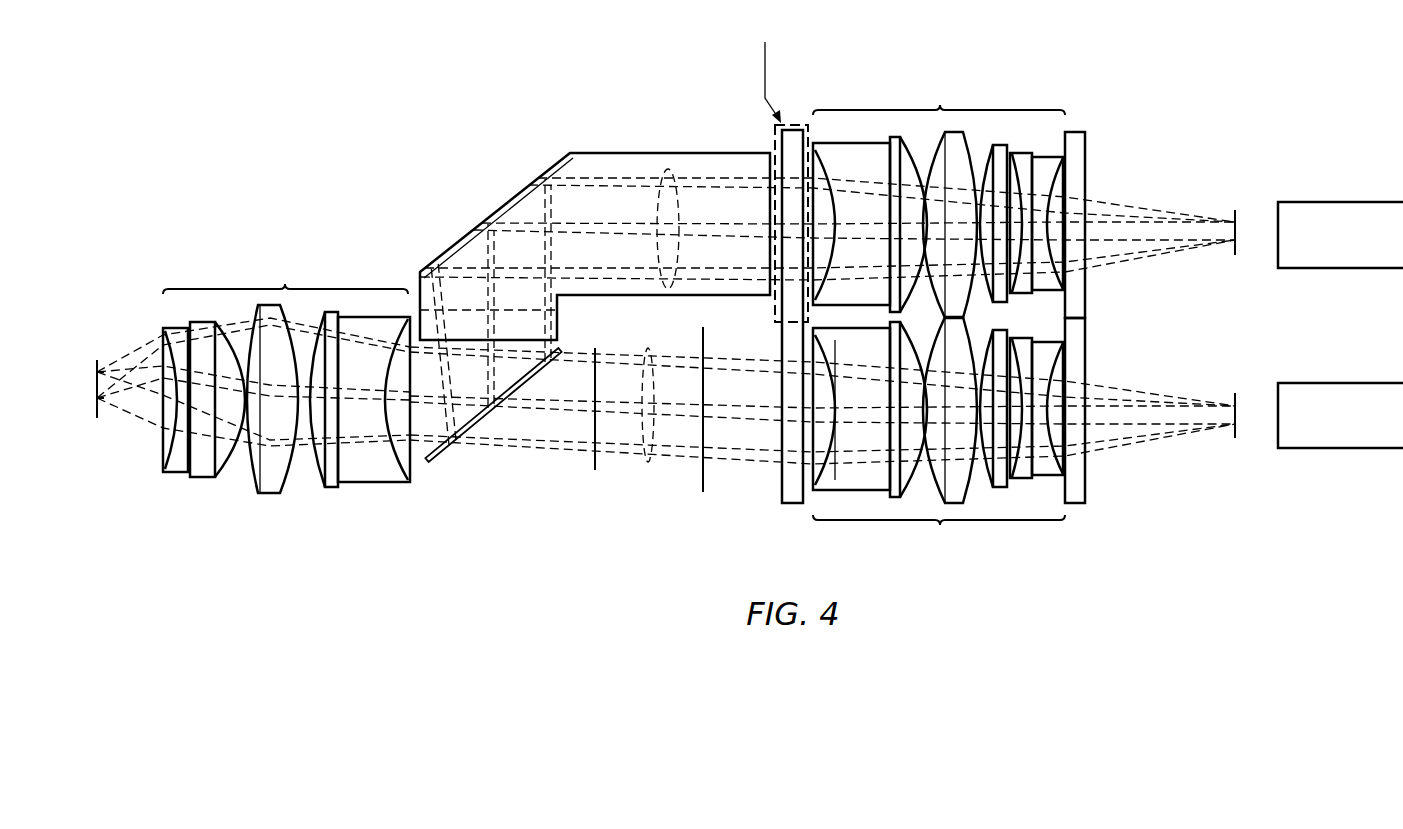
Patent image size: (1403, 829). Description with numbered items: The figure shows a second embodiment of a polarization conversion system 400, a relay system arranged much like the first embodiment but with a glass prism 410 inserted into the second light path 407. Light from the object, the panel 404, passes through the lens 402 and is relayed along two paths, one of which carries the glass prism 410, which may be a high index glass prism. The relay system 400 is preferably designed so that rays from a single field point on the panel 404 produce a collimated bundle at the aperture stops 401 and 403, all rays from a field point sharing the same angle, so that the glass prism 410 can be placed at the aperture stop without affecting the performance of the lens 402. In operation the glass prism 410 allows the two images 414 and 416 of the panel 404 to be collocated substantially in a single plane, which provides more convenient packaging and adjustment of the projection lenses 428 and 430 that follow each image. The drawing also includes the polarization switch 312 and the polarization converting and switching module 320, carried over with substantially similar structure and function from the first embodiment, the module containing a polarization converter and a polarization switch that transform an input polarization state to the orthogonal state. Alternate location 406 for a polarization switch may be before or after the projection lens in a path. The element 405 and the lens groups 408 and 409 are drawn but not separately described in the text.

The polarization conversion system 400 is at (384, 98).
The lens 402 is at (286, 376).
The panel 404 is at (100, 420).
The aperture stop 403 is at (468, 310).
The glass prism 410 is at (513, 197).
The aperture stop 401 is at (593, 460).
The lens 405 is at (650, 464).
The second light path 407 is at (670, 170).
The polarization switch 312 is at (792, 506).
The polarization converting and switching module 320 is at (805, 116).
The upper relay lens group 408 is at (939, 197).
The lower relay lens group 409 is at (939, 439).
The alternate location 406 is at (1078, 506).
The image 414 is at (1238, 257).
The image 416 is at (1238, 440).
The projection lens 428 is at (1345, 202).
The projection lens 430 is at (1345, 448).